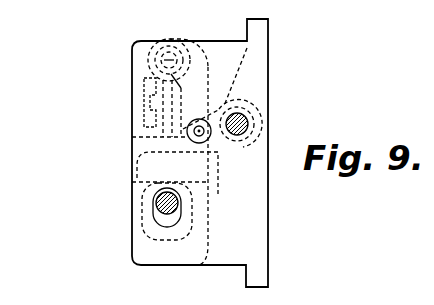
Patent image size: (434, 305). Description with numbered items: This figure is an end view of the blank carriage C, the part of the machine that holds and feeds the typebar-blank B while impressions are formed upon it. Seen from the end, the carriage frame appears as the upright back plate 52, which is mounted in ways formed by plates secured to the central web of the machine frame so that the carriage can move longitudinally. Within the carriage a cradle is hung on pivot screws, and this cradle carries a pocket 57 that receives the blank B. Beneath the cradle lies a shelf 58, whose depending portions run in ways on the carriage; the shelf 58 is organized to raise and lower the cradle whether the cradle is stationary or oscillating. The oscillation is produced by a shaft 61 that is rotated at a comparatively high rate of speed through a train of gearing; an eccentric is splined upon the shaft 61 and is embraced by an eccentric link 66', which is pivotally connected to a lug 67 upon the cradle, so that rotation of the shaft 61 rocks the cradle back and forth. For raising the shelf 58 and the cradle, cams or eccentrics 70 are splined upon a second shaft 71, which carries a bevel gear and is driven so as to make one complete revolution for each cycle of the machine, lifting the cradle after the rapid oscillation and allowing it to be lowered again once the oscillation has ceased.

The back plate 52 is at (268, 32).
The carriage C is at (268, 86).
The typebar-blank B is at (157, 104).
The pocket 57 is at (160, 140).
The shelf 58 is at (145, 168).
The lug 67 is at (187, 146).
The shaft 61 is at (237, 135).
The cams or eccentrics 70 is at (152, 212).
The shaft 71 is at (158, 194).
The eccentric link 66' is at (223, 166).